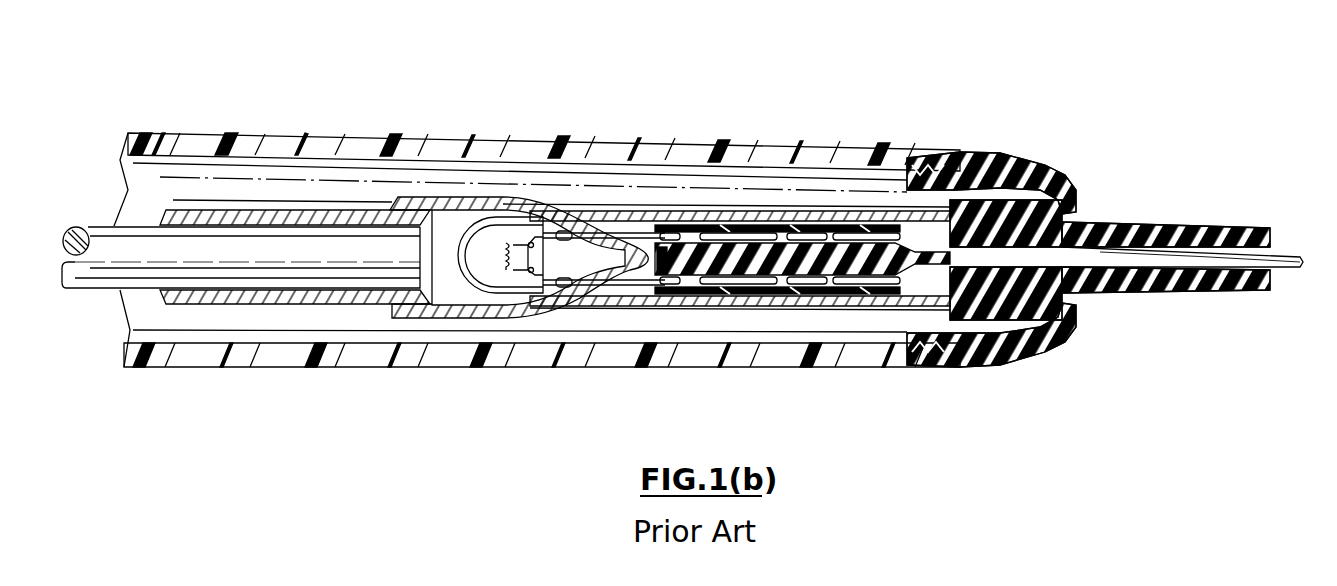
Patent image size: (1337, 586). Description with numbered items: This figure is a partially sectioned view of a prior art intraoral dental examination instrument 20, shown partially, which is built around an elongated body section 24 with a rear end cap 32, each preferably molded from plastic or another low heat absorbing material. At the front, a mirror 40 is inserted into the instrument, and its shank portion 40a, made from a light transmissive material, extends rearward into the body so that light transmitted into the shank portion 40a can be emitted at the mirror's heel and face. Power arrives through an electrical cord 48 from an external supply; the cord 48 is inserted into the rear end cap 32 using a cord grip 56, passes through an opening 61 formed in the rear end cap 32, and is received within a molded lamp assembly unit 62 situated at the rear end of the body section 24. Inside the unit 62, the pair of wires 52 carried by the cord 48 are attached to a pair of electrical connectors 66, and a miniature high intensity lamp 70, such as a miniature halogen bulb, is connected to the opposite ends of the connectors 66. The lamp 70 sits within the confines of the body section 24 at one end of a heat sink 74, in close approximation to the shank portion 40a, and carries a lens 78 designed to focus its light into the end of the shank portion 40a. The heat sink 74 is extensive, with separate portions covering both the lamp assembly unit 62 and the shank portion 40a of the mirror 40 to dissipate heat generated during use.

The intraoral dental examination instrument 20 is at (597, 80).
The elongated body section 24 is at (345, 133).
The rear end cap 32 is at (1040, 165).
The mirror 40 is at (92, 218).
The shank portion 40a is at (110, 273).
The electrical cord 48 is at (1285, 278).
The wires 52 is at (880, 240).
The cord grip 56 is at (1175, 282).
The opening 61 is at (1085, 212).
The molded lamp assembly unit 62 is at (600, 225).
The electrical connectors 66 is at (745, 280).
The miniature high intensity lamp 70 is at (548, 290).
The heat sink 74 is at (305, 218).
The lens 78 is at (472, 290).